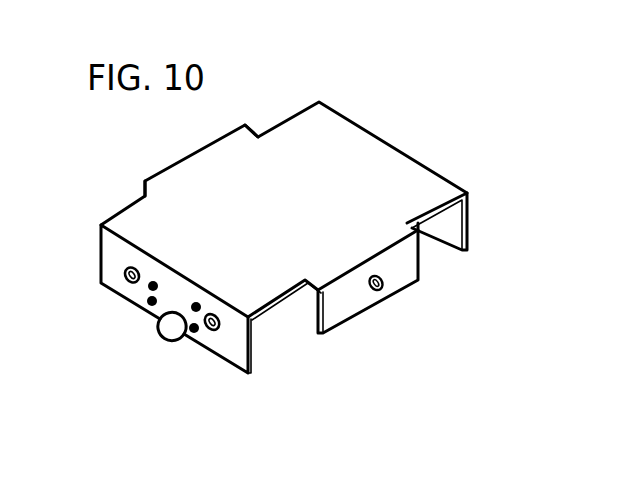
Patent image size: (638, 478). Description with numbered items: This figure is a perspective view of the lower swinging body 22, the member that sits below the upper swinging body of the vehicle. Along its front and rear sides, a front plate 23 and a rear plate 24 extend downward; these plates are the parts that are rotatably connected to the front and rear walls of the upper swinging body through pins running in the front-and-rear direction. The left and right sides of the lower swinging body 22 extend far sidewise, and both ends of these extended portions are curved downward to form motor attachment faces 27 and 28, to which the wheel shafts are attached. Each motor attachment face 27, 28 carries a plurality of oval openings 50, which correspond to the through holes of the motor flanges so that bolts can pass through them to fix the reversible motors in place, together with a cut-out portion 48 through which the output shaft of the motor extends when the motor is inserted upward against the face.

The lower swinging body 22 is at (423, 163).
The front plate 23 is at (146, 189).
The rear plate 24 is at (402, 273).
The motor attachment face 27 is at (122, 300).
The motor attachment face 28 is at (468, 225).
The cut-out portion 48 is at (175, 322).
The oval opening 50 is at (197, 303).